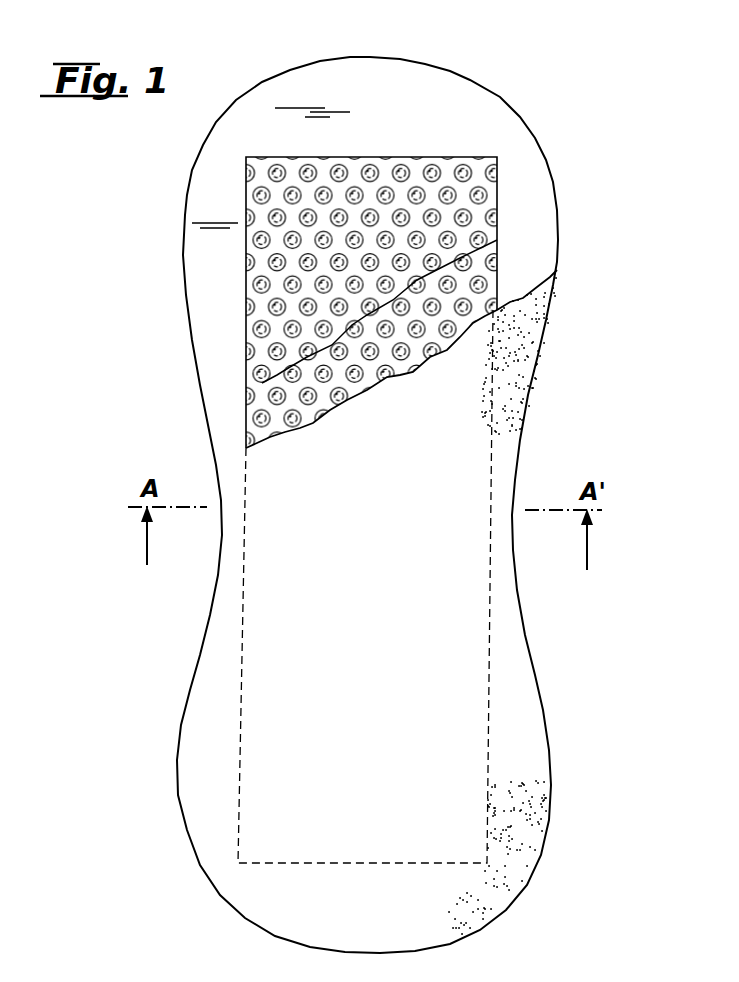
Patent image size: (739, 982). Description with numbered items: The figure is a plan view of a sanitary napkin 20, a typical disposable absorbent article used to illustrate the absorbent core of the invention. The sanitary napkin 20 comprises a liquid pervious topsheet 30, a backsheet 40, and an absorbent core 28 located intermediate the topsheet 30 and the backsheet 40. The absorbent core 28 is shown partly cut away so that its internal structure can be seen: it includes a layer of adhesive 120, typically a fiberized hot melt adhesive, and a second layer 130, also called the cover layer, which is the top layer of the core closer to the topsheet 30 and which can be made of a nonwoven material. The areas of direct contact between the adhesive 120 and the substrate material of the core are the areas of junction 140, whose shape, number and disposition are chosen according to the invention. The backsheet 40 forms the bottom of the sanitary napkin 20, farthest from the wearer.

The sanitary napkin 20 is at (558, 98).
The absorbent core 28 is at (506, 183).
The layer of adhesive 120 is at (497, 205).
The second layer 130 is at (497, 273).
The areas of junction 140 is at (252, 364).
The backsheet 40 is at (215, 297).
The topsheet 30 is at (510, 392).